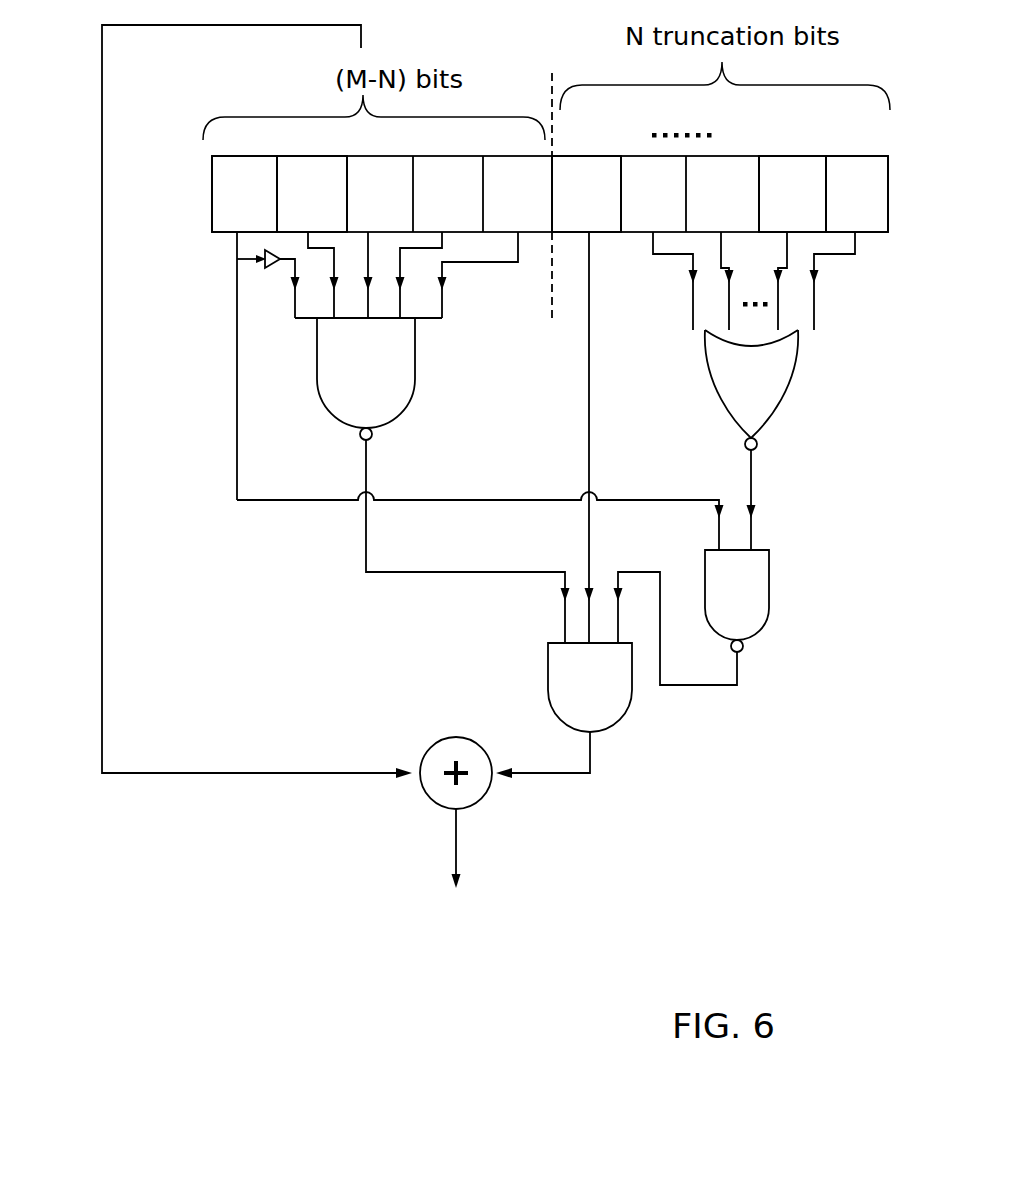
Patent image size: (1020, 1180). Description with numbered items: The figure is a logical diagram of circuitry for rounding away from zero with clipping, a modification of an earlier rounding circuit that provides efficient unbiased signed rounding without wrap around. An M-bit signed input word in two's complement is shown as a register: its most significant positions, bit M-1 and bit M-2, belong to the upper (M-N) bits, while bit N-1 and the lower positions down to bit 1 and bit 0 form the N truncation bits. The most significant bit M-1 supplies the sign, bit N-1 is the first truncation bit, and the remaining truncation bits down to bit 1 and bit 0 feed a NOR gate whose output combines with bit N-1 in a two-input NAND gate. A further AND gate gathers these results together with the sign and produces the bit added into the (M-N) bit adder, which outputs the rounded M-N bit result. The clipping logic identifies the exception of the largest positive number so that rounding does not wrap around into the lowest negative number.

The most significant bit of register M-1 is at (244, 177).
The second most significant bit of register M-2 is at (312, 177).
The most significant truncation bit N-1 is at (586, 176).
The bit 1 of register 1 is at (792, 175).
The bit 0 of register 0 is at (858, 175).
The M-N bit bus M-N is at (122, 575).